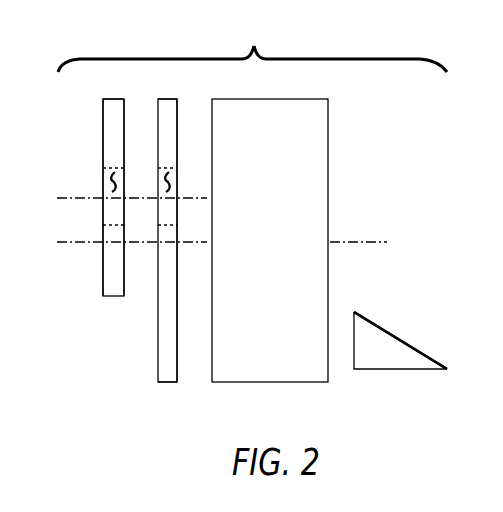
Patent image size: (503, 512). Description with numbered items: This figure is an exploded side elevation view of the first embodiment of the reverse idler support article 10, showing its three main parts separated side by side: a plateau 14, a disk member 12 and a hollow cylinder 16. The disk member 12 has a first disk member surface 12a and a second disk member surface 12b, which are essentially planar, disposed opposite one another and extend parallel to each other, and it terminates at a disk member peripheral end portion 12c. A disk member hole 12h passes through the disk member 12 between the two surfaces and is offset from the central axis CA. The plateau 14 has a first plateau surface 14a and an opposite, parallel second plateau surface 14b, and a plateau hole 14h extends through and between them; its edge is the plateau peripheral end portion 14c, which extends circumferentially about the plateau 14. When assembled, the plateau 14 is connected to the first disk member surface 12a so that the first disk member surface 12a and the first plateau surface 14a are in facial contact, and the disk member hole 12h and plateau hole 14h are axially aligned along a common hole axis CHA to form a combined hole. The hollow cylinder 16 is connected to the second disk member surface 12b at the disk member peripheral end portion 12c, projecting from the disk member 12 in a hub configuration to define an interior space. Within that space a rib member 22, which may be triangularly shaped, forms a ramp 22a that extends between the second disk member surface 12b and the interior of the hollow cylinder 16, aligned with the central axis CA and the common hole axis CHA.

The reverse idler support article 10 is at (252, 47).
The disk member 12 is at (168, 383).
The first disk member surface 12a is at (158, 107).
The second disk member surface 12b is at (178, 330).
The disk member peripheral end portion 12c is at (178, 107).
The disk member hole 12h is at (164, 180).
The plateau 14 is at (108, 297).
The first plateau surface 14a is at (124, 270).
The second plateau surface 14b is at (103, 122).
The plateau peripheral end portion 14c is at (110, 98).
The plateau hole 14h is at (110, 183).
The hollow cylinder 16 is at (328, 132).
The rib member 22 is at (389, 357).
The ramp 22a is at (406, 342).
The common hole axis CHA is at (107, 201).
The central axis CA is at (237, 245).